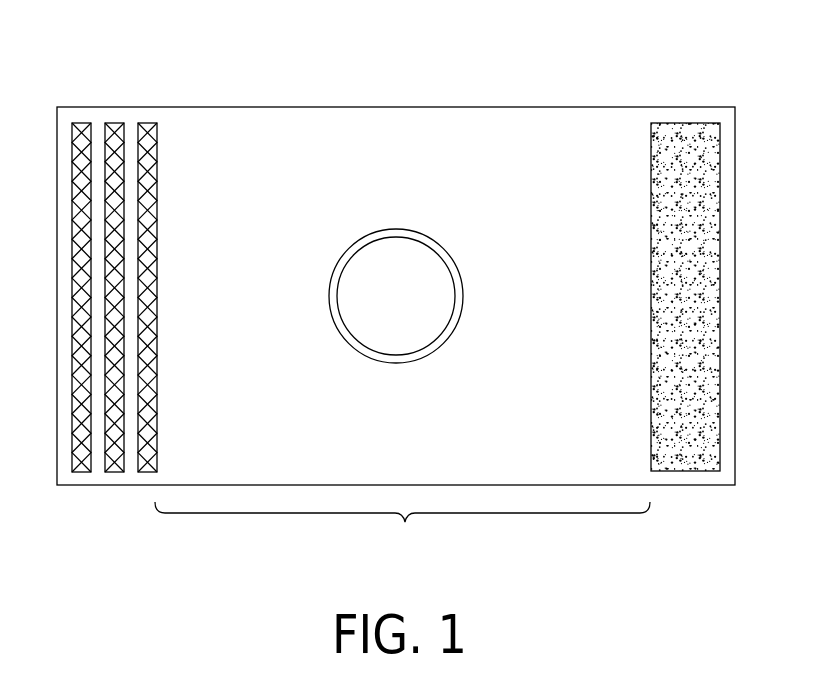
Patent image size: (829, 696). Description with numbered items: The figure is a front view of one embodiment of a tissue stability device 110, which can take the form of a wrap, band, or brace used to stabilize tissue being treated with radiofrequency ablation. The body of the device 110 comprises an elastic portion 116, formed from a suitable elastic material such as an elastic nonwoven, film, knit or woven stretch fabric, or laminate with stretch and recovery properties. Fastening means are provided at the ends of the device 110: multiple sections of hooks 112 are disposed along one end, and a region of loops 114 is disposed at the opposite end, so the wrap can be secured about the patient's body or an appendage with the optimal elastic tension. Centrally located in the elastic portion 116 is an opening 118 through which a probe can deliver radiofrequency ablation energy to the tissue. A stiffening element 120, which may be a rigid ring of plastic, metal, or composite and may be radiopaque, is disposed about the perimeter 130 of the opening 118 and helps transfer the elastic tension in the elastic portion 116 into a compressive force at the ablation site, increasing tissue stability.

The device 110 is at (180, 98).
The hooks 112 is at (142, 472).
The loops 114 is at (686, 470).
The elastic portion 116 is at (402, 531).
The opening 118 is at (398, 338).
The stiffening element 120 is at (350, 248).
The perimeter 130 is at (397, 236).